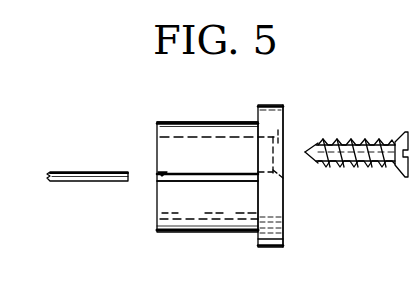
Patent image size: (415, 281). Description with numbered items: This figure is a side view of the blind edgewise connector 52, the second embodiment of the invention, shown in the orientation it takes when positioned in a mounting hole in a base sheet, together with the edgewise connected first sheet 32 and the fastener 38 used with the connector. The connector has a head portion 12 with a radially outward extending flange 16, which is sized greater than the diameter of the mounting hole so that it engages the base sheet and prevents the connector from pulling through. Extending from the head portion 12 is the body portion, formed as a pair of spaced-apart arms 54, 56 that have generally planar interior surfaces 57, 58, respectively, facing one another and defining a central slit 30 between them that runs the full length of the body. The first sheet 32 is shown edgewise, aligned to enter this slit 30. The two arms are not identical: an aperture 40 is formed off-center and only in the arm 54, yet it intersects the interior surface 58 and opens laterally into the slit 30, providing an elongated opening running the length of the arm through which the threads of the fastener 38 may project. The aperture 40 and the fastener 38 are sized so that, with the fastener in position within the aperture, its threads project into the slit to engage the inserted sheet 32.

The head portion 12 is at (285, 118).
The flange 16 is at (276, 105).
The slit 30 is at (157, 181).
The first sheet 32 is at (100, 183).
The fastener 38 is at (366, 166).
The aperture 40 is at (287, 139).
The blind edgewise connector 52 is at (292, 218).
The arm 54 is at (173, 150).
The arm 56 is at (212, 218).
The interior surface 57 is at (185, 181).
The interior surface 58 is at (160, 173).